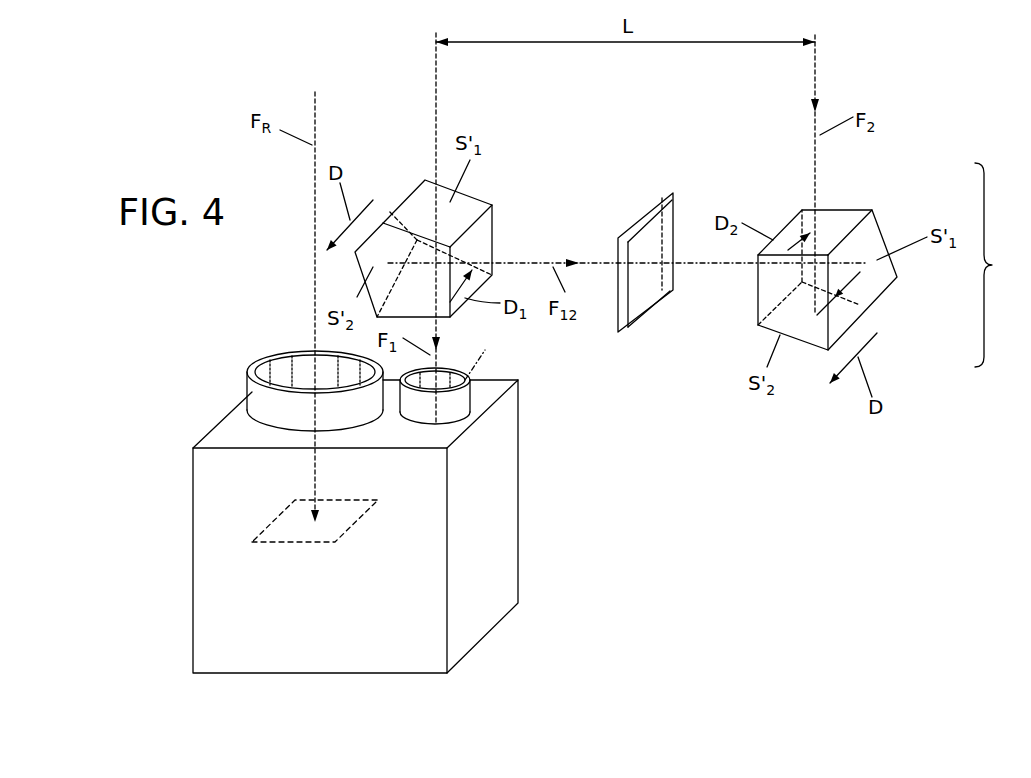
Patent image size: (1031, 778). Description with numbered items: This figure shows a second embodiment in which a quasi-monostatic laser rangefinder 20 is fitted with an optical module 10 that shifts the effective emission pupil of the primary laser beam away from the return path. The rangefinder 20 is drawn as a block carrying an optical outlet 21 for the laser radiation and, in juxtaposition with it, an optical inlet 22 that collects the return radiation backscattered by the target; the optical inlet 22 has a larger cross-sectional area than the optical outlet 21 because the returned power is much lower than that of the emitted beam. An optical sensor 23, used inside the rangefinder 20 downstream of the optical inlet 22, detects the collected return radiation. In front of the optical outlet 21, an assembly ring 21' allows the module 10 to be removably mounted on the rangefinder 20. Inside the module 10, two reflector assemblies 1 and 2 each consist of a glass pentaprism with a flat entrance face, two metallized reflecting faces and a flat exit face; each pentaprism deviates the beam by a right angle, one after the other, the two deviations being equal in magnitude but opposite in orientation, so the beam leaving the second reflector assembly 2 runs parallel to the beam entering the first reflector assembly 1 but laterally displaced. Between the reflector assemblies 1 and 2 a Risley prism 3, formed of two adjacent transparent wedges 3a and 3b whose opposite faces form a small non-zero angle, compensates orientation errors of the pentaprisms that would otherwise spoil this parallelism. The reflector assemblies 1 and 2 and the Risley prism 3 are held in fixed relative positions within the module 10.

The reflector assembly 1 is at (402, 212).
The reflector assembly 2 is at (883, 222).
The Risley prism 3 is at (665, 219).
The transparent wedge 3a is at (645, 213).
The transparent wedge 3b is at (677, 262).
The optical module 10 is at (996, 265).
The laser rangefinder 20 is at (490, 512).
The optical outlet 21 is at (495, 405).
The assembly ring 21' is at (484, 353).
The optical inlet 22 is at (273, 353).
The optical sensor 23 is at (277, 517).